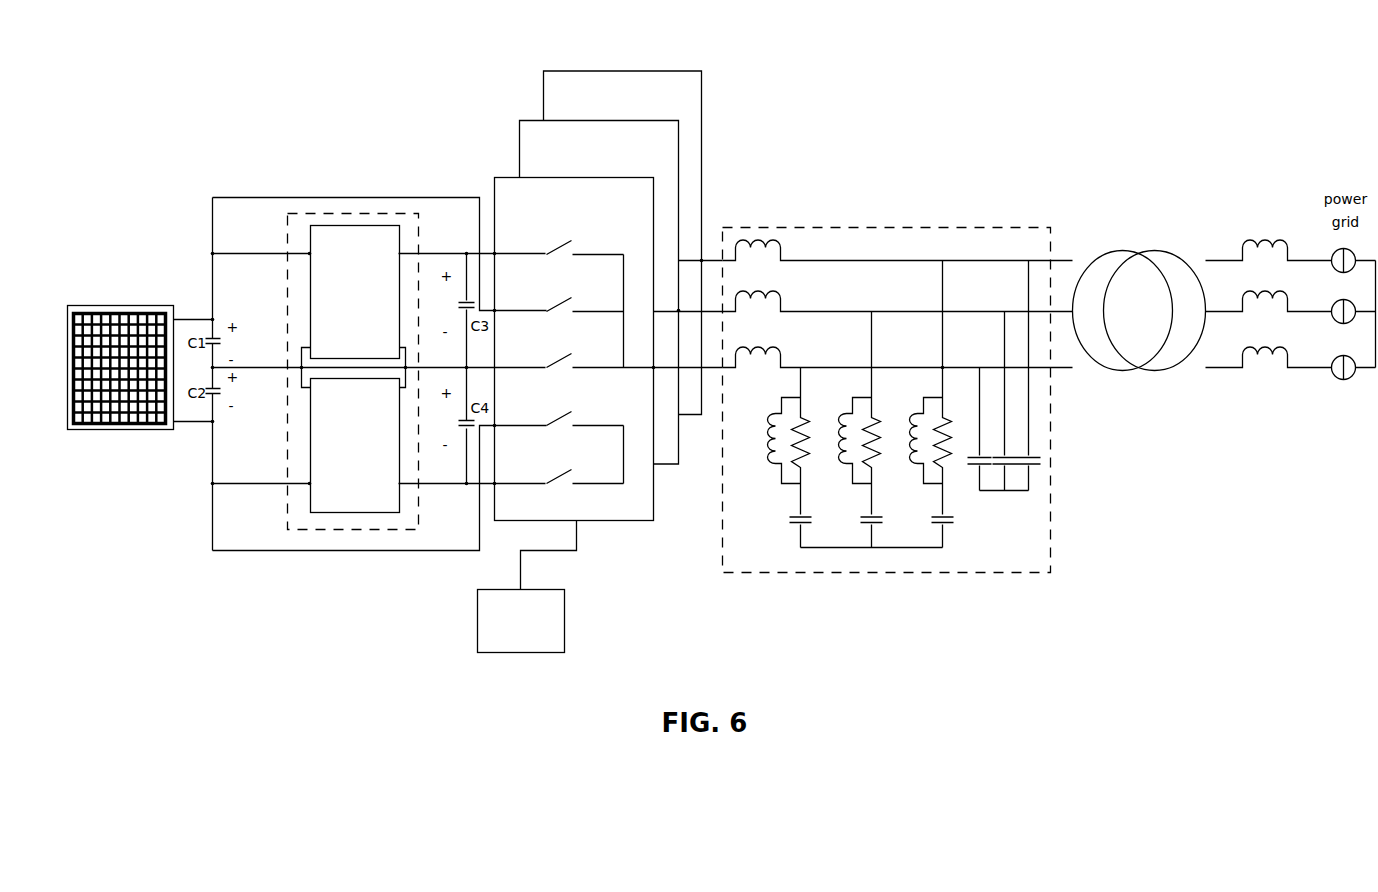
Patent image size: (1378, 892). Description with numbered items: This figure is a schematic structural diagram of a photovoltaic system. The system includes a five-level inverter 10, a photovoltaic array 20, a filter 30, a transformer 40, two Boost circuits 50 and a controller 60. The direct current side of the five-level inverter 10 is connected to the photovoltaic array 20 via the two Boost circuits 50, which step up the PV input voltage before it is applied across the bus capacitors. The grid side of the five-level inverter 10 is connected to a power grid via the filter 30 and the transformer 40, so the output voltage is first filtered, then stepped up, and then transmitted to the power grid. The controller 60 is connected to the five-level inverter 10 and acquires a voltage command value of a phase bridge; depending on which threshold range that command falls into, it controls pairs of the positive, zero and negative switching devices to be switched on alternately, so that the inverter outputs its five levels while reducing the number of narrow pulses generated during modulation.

The five-level inverter 10 is at (602, 70).
The photovoltaic array 20 is at (118, 305).
The filter 30 is at (818, 227).
The transformer 40 is at (1137, 250).
The Boost circuits 50 is at (352, 212).
The controller 60 is at (565, 627).